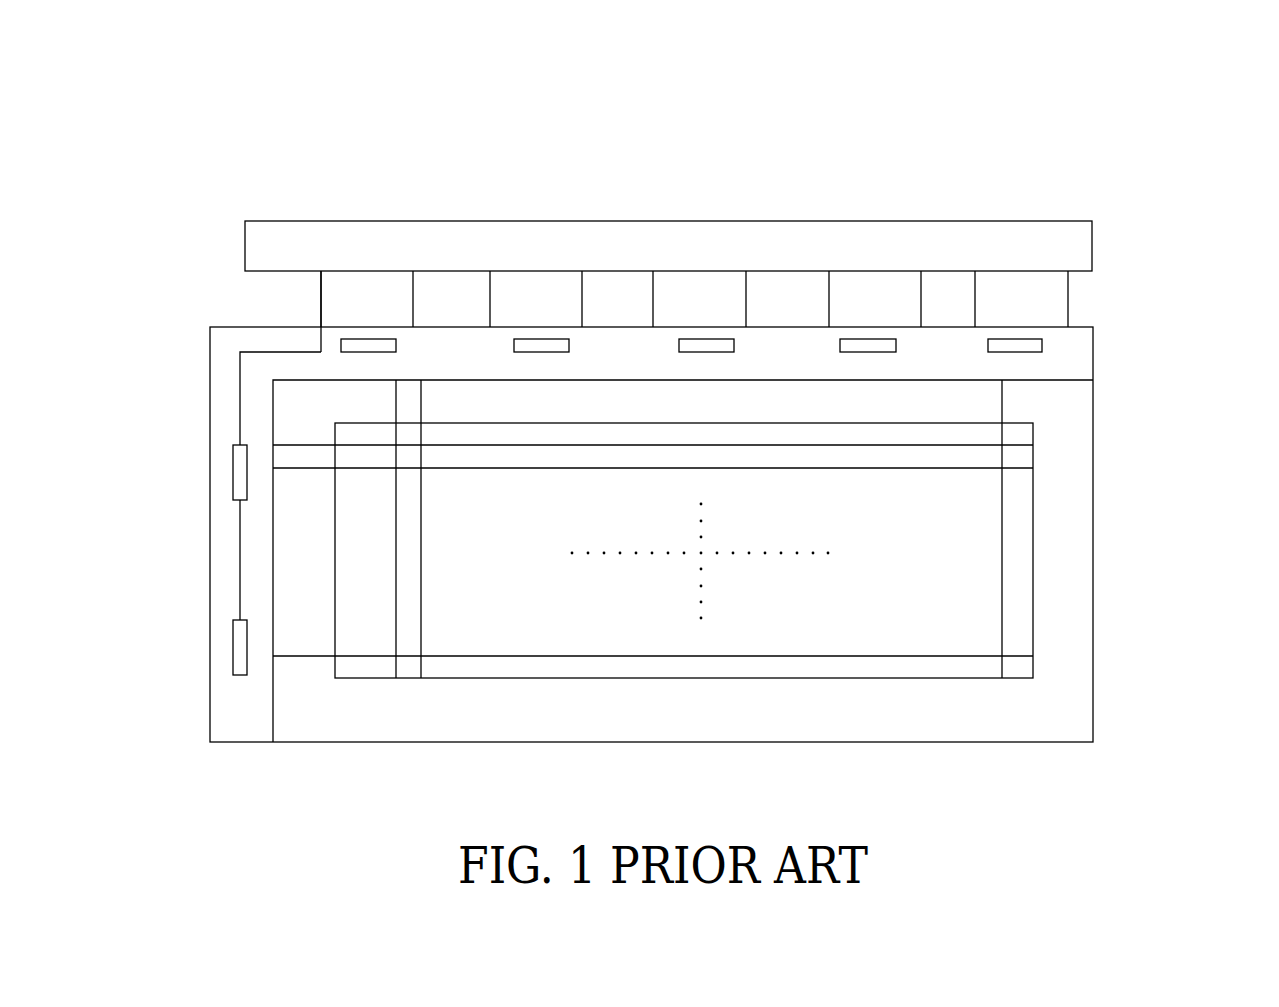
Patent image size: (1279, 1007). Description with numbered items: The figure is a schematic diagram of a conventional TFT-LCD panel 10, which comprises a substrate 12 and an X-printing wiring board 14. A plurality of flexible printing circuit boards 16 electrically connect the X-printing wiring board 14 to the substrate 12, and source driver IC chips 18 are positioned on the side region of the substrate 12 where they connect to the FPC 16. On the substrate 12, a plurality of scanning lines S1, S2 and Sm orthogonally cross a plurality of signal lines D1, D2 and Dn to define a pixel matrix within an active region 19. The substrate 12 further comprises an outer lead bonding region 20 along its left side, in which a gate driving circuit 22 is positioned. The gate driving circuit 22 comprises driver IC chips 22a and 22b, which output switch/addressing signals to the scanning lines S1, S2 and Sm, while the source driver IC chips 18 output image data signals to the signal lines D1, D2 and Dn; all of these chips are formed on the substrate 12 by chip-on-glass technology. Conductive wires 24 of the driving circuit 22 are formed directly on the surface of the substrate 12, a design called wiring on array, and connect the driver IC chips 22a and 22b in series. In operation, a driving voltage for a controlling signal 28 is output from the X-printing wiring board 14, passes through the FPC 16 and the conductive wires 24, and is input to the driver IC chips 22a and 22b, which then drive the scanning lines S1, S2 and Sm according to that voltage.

The TFT-LCD panel 10 is at (1140, 146).
The substrate 12 is at (1093, 592).
The X-printing wiring board 14 is at (1080, 250).
The flexible printing circuit boards 16 is at (345, 302).
The source driver IC chips 18 is at (1035, 344).
The active region 19 is at (1033, 552).
The outer lead bonding region 20 is at (242, 724).
The gate driving circuit 22 is at (158, 560).
The driver IC chip 22a is at (233, 474).
The driver IC chip 22b is at (233, 648).
The conductive wires 24 is at (240, 392).
The controlling signal 28 is at (321, 271).
The scanning line S1 is at (1018, 446).
The scanning line S2 is at (1018, 468).
The scanning line Sm is at (1018, 655).
The signal line D1 is at (390, 670).
The signal line D2 is at (427, 670).
The signal line Dn is at (1002, 665).